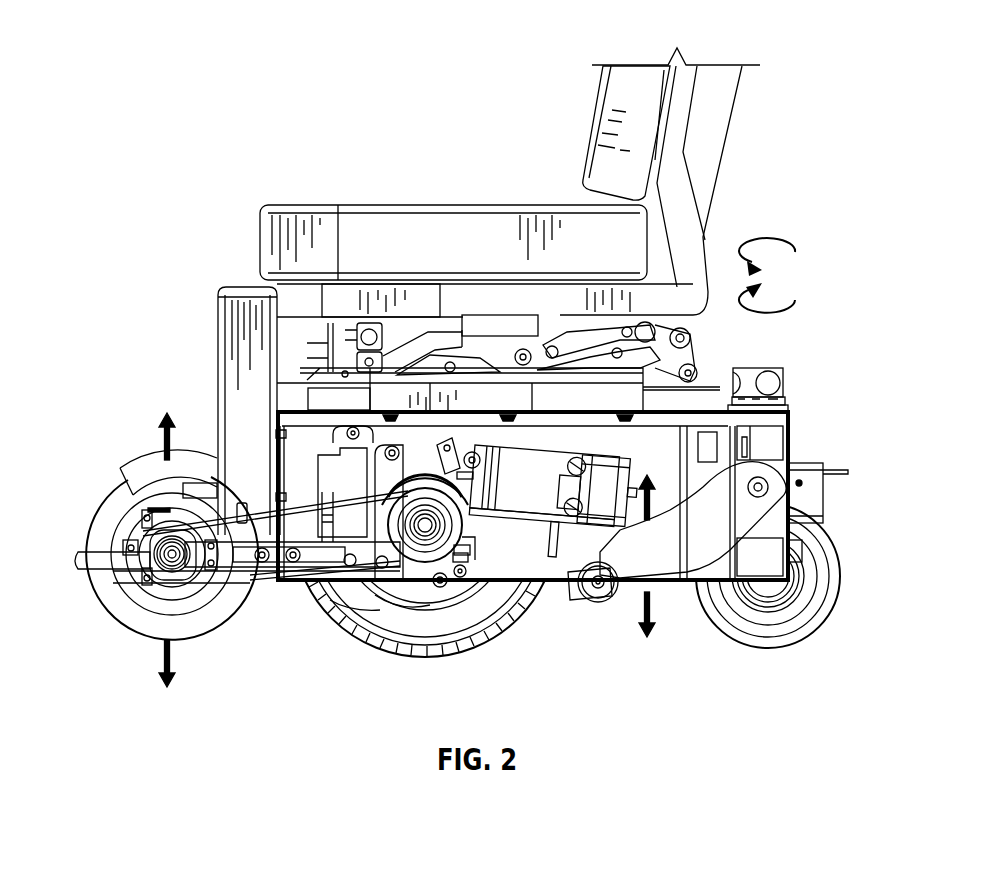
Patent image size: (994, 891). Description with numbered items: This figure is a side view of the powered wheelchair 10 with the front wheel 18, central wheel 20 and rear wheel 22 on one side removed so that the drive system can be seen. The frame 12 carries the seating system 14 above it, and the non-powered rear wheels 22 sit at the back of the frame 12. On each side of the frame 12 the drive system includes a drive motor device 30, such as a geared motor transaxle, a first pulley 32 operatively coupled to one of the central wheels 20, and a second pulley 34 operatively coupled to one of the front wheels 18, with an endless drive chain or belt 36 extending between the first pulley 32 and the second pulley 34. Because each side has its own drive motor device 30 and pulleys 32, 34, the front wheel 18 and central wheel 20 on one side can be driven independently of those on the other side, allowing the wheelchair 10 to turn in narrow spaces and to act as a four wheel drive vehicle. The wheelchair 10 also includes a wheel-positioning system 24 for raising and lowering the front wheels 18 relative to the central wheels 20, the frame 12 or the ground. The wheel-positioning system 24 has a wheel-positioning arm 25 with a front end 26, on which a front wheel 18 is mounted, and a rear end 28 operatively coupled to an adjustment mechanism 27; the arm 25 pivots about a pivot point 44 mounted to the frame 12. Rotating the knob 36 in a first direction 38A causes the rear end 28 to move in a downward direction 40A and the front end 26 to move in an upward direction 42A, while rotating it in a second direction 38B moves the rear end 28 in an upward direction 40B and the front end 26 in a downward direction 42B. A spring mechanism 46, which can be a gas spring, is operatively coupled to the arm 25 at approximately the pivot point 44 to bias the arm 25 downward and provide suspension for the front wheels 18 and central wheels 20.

The wheelchair 10 is at (294, 40).
The frame 12 is at (235, 382).
The seating system 14 is at (486, 188).
The front wheels 18 is at (103, 603).
The central wheels 20 is at (433, 657).
The rear wheels 22 is at (828, 593).
The wheel-positioning system 24 is at (683, 636).
The wheel-positioning arms 25 is at (472, 537).
The front end 26 is at (200, 560).
The adjustment mechanism 27 is at (780, 358).
The rear end 28 is at (767, 500).
The drive motor device 30 is at (533, 503).
The first pulley 32 is at (392, 568).
The second pulley 34 is at (168, 590).
The endless drive chain or belt 36 is at (385, 605).
The first direction 38A is at (772, 312).
The second direction 38B is at (770, 240).
The downward direction 40A is at (640, 607).
The upward direction 40B is at (652, 498).
The upward direction 42A is at (160, 435).
The downward direction 42B is at (176, 664).
The pivot point 44 is at (340, 605).
The spring mechanism 46 is at (310, 497).